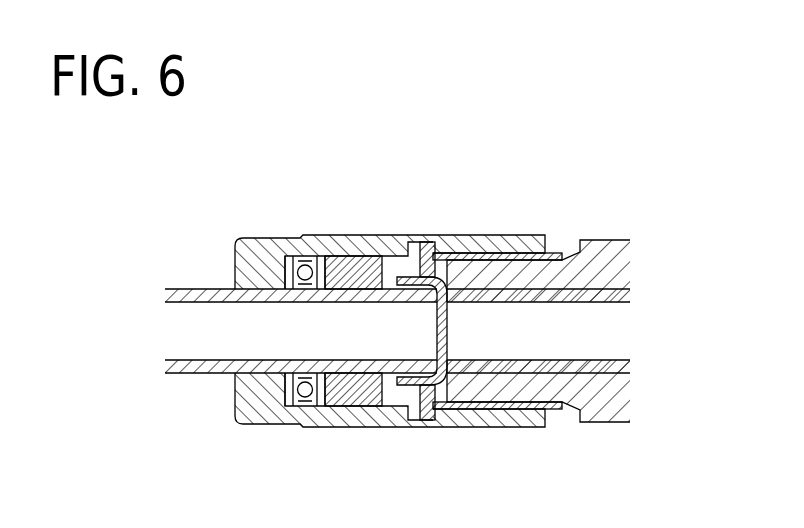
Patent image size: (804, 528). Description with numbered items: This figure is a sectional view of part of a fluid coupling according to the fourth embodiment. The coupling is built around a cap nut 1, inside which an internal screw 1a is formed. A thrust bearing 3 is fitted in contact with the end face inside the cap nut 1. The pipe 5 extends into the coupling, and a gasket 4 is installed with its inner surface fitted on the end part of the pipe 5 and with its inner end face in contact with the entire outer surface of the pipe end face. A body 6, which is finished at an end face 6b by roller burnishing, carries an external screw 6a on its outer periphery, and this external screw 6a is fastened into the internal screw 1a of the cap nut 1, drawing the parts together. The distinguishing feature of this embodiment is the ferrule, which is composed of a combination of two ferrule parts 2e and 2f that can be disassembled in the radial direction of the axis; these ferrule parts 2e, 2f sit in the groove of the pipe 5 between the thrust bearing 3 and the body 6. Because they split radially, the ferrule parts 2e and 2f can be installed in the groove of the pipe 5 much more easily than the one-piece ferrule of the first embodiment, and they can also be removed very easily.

The cap nut 1 is at (216, 240).
The internal screw 1a is at (462, 236).
The ferrule part 2e is at (360, 237).
The ferrule part 2f is at (365, 426).
The thrust bearing 3 is at (288, 414).
The gasket 4 is at (421, 256).
The pipe 5 is at (207, 372).
The body 6 is at (605, 415).
The external screw 6a is at (598, 240).
The end face 6b is at (428, 380).